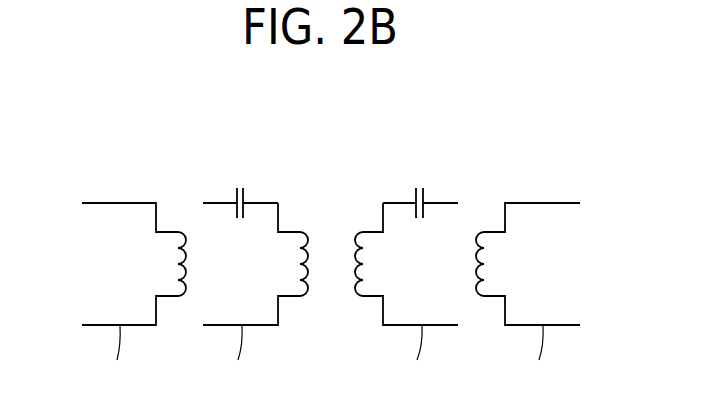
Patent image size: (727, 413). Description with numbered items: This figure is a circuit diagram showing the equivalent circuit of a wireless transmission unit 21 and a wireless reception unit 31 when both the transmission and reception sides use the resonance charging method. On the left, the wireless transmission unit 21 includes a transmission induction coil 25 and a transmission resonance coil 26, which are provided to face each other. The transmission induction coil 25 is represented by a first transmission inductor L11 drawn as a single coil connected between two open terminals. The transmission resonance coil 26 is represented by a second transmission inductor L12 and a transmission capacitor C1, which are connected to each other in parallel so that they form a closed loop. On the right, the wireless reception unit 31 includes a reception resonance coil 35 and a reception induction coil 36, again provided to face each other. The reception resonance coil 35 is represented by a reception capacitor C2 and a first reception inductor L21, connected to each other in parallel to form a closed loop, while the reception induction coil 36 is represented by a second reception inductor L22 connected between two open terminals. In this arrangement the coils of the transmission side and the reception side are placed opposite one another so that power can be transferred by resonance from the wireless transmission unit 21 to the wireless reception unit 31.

The wireless transmission unit 21 is at (83, 181).
The transmission induction coil 25 is at (116, 356).
The transmission resonance coil 26 is at (238, 356).
The wireless reception unit 31 is at (582, 181).
The reception resonance coil 35 is at (418, 356).
The reception induction coil 36 is at (540, 356).
The first transmission inductor L11 is at (134, 264).
The second transmission inductor L12 is at (255, 264).
The transmission capacitor C1 is at (240, 190).
The first reception inductor L21 is at (406, 264).
The second reception inductor L22 is at (528, 264).
The reception capacitor C2 is at (420, 190).